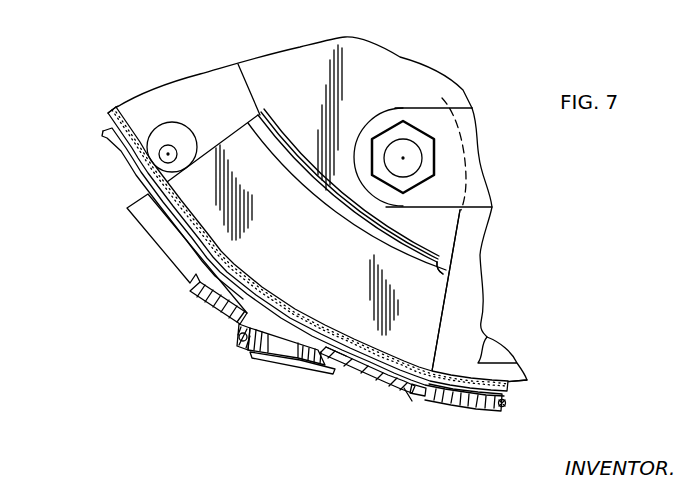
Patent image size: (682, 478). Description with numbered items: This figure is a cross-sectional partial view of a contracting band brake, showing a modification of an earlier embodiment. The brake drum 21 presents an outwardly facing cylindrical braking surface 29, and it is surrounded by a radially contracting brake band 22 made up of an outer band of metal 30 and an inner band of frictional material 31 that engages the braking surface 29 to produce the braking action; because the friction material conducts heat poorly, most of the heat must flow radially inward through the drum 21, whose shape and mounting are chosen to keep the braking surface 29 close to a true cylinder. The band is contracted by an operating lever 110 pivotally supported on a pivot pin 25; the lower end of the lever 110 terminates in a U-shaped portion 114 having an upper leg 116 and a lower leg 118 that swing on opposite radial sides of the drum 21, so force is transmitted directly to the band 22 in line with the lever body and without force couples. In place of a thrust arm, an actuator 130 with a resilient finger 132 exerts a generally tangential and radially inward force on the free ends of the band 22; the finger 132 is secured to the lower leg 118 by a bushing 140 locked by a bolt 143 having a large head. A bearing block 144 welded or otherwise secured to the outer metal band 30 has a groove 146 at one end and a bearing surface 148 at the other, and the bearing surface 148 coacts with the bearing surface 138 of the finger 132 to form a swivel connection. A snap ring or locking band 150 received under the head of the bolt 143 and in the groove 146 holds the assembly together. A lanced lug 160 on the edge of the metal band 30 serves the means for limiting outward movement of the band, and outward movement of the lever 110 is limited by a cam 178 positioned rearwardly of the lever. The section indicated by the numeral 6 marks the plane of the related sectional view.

The section line 6- 6 is at (285, 377).
The brake drum 21 is at (530, 355).
The brake band 22 is at (133, 174).
The pivot pin 25 is at (422, 148).
The braking surface 29 is at (523, 388).
The outer band of metal 30 is at (106, 111).
The inner band of frictional material 31 is at (118, 104).
The operating lever 110 is at (144, 261).
The U-shaped portion 114 is at (430, 307).
The upper leg 116 is at (440, 273).
The lower leg 118 is at (193, 301).
The actuator 130 is at (387, 404).
The resilient finger 132 is at (352, 388).
The bearing surface 138 is at (416, 393).
The bushing 140 is at (258, 356).
The bolt 143 is at (307, 371).
The bearing block 144 is at (485, 424).
The groove 146 is at (506, 406).
The bearing surface 148 is at (408, 403).
The snap ring or locking band 150 is at (237, 338).
The lanced lug 160 is at (102, 133).
The cam 178 is at (170, 122).